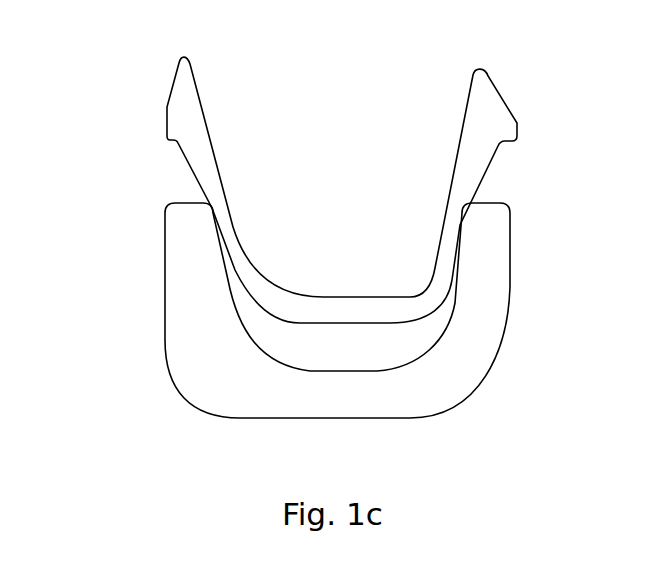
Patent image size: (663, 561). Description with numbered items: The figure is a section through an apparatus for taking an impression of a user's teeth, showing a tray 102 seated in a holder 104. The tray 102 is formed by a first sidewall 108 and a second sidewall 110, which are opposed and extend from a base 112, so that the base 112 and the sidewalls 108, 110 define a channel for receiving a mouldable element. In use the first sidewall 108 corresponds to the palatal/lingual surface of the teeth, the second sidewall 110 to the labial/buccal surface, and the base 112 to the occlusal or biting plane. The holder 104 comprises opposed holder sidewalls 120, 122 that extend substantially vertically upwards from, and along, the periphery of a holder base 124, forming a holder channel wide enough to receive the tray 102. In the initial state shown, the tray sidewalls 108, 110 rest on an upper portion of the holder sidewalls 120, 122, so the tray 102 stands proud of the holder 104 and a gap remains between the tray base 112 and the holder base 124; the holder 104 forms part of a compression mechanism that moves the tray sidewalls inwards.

The tray 102 is at (225, 108).
The holder 104 is at (518, 384).
The first sidewall 108 is at (492, 102).
The second sidewall 110 is at (183, 95).
The base 112 is at (340, 297).
The holder sidewall 120 is at (482, 260).
The holder sidewall 122 is at (187, 253).
The holder base 124 is at (280, 397).